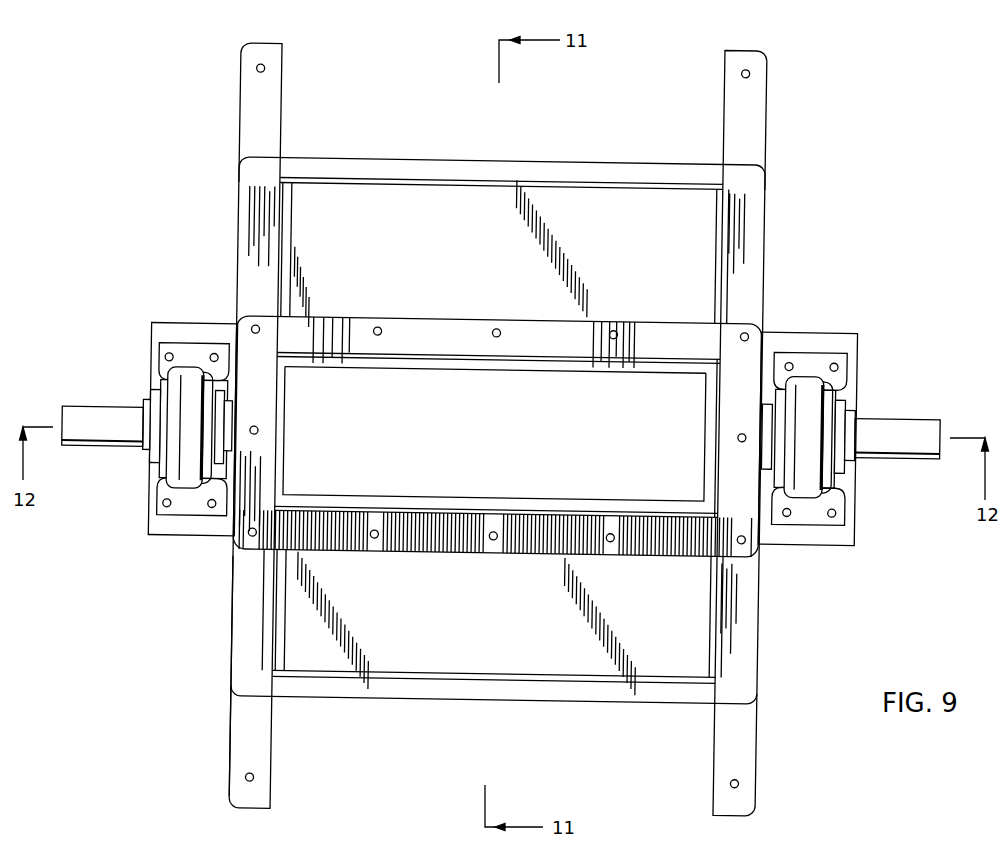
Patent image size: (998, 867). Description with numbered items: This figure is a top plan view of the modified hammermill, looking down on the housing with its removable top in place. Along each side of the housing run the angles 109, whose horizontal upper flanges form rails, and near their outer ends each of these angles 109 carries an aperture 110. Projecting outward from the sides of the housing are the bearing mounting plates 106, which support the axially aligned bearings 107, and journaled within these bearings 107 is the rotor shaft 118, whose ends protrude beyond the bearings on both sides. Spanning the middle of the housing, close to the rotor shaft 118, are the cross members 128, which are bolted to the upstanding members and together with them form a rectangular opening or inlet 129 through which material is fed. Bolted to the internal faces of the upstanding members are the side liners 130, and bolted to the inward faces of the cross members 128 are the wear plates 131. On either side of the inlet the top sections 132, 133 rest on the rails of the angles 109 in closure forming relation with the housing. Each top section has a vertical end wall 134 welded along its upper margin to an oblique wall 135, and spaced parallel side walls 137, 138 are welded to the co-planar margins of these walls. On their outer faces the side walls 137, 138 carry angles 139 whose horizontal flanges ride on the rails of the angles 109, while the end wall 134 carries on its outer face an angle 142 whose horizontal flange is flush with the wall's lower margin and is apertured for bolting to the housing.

The bearing mounting plate 106 is at (150, 515).
The bearing 107 is at (157, 368).
The angle 109 is at (282, 110).
The aperture 110 is at (743, 71).
The rotor shaft 118 is at (908, 420).
The cross member 128 is at (395, 317).
The inlet 129 is at (586, 388).
The side liner 130 is at (287, 438).
The wear plate 131 is at (497, 365).
The top section 132 is at (420, 653).
The top section 133 is at (617, 197).
The end wall 134 is at (408, 187).
The oblique wall 135 is at (543, 677).
The side wall 137 is at (268, 600).
The side wall 138 is at (713, 613).
The angle 139 is at (637, 320).
The angle 142 is at (230, 647).